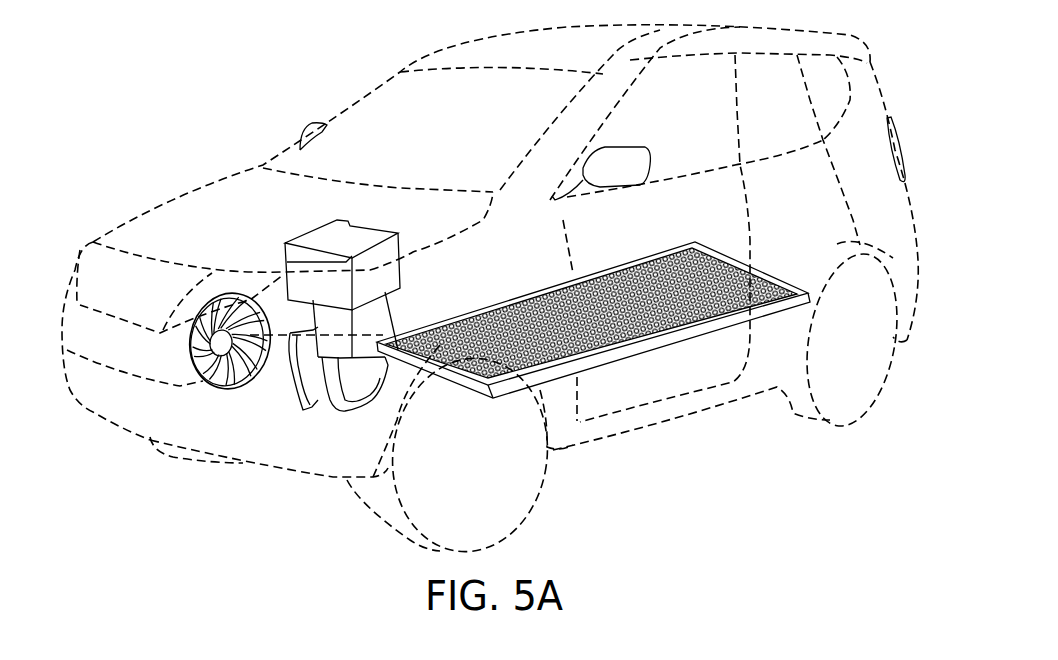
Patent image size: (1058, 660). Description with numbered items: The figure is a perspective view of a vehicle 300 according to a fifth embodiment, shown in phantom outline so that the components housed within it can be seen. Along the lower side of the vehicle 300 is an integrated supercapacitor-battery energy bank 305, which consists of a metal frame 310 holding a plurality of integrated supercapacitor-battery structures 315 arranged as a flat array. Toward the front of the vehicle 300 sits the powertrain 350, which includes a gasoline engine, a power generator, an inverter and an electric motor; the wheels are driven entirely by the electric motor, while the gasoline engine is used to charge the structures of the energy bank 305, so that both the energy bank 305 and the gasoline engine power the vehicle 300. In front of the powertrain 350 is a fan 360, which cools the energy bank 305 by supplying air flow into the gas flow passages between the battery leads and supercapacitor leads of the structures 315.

The vehicle 300 is at (827, 32).
The integrated supercapacitor-battery energy bank 305 is at (597, 326).
The metal frame 310 is at (638, 330).
The integrated supercapacitor-battery structures 315 is at (473, 368).
The powertrain 350 is at (339, 410).
The fan 360 is at (216, 385).